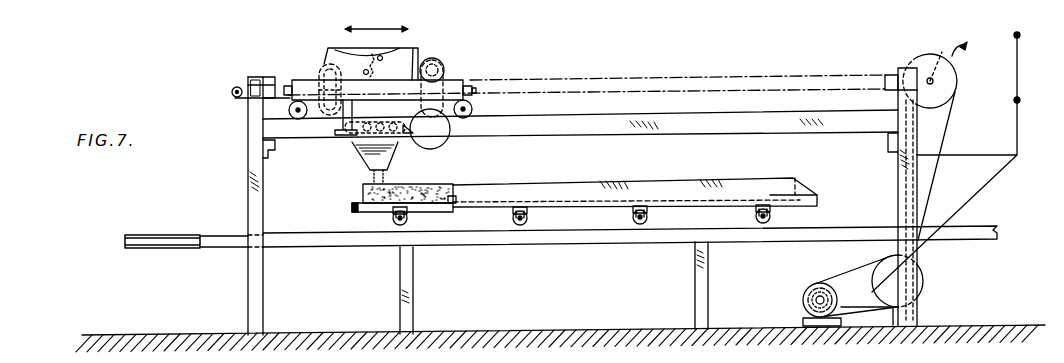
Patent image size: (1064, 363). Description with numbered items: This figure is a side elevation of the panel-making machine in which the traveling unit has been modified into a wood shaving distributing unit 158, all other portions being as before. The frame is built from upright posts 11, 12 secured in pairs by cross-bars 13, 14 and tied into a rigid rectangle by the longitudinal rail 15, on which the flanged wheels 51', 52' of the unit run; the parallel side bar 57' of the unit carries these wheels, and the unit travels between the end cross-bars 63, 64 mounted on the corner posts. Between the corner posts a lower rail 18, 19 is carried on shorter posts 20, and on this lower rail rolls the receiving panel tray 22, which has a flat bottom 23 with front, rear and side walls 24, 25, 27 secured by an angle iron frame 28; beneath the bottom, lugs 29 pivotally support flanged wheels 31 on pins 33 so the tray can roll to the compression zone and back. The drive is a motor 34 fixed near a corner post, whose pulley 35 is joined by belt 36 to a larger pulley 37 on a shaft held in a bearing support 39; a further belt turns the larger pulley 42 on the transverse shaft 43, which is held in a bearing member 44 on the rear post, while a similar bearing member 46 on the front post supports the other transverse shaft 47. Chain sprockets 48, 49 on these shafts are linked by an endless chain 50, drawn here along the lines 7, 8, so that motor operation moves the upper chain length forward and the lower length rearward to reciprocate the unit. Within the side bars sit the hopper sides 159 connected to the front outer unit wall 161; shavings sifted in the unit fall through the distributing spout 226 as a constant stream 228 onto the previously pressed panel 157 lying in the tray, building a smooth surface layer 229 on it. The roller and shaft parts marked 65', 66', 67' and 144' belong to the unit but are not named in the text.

The drive shaft axis 7 is at (783, 75).
The feed screw shaft 8 is at (758, 99).
The upright frame post 11 is at (253, 200).
The upright frame post 12 is at (920, 308).
The cross-bar 13 is at (272, 170).
The cross-bar 14 is at (888, 146).
The longitudinal rail 15 is at (708, 135).
The lower rail 18 is at (220, 248).
The lower rail 19 is at (160, 249).
The shorter post 20 is at (413, 276).
The receiving panel tray 22 is at (594, 181).
The flat bottom 23 is at (453, 212).
The front wall 24 is at (364, 193).
The rear wall 25 is at (800, 192).
The side wall 27 is at (549, 174).
The angle iron frame 28 is at (353, 208).
The lug 29 is at (408, 221).
The flanged wheel 31 is at (393, 224).
The pin or shaft 33 is at (397, 230).
The driving motor 34 is at (803, 304).
The motor pulley 35 is at (818, 289).
The belt 36 is at (840, 280).
The pulley 37 is at (872, 284).
The bearing support 39 is at (867, 317).
The pulley 42 is at (950, 97).
The transverse shaft 43 is at (935, 82).
The bearing member 44 is at (912, 67).
The bearing member 46 is at (252, 78).
The transverse shaft 47 is at (232, 91).
The chain sprocket 48 is at (942, 57).
The chain sprocket 49 is at (234, 97).
The endless chain 50 is at (733, 79).
The flanged wheel 51' is at (307, 131).
The flanged wheel 52' is at (484, 108).
The side bar 57' is at (294, 63).
The end cross-bar 63 is at (270, 76).
The end cross-bar 64 is at (890, 77).
The slotted roller 65' is at (308, 88).
The shaft housing 66' is at (400, 81).
The roller 67' is at (313, 45).
The roller 144' is at (472, 74).
The composite panel board 157 is at (455, 199).
The wood shaving distributing unit 158 is at (333, 46).
The hopper side 159 is at (347, 51).
The front outer unit wall 161 is at (410, 37).
The distributing spout 226 is at (356, 152).
The stream of material 228 is at (383, 178).
The surface layer 229 is at (428, 187).